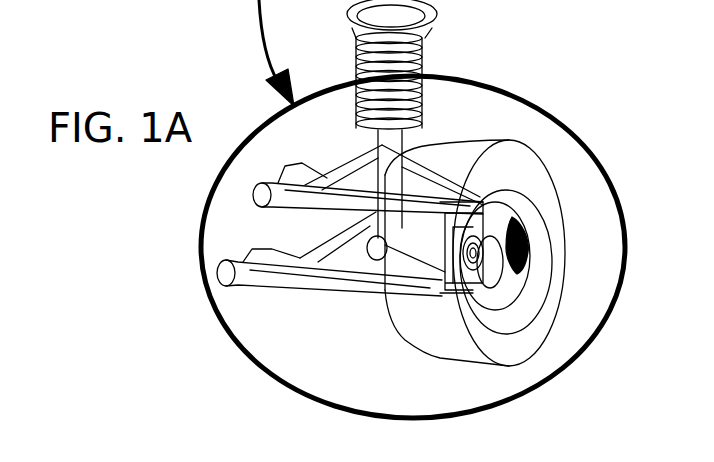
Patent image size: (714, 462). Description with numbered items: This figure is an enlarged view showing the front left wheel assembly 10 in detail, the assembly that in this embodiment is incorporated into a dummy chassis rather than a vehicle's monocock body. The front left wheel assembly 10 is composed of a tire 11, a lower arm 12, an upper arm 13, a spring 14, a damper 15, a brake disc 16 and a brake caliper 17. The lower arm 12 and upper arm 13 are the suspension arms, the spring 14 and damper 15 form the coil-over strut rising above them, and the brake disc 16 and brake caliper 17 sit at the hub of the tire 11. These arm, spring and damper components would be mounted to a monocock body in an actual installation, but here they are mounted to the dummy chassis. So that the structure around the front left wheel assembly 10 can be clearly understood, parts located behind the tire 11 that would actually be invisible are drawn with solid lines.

The front left wheel assembly 10 is at (528, 101).
The tire 11 is at (505, 149).
The lower arm 12 is at (338, 288).
The upper arm 13 is at (315, 183).
The spring 14 is at (418, 48).
The damper 15 is at (392, 152).
The brake disc 16 is at (540, 212).
The brake caliper 17 is at (533, 251).